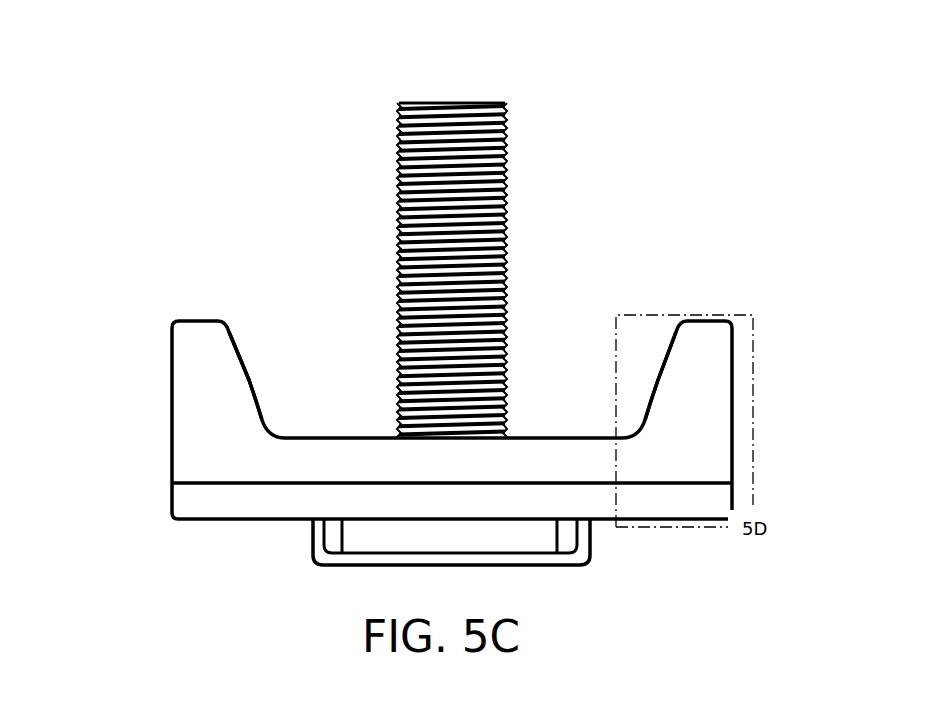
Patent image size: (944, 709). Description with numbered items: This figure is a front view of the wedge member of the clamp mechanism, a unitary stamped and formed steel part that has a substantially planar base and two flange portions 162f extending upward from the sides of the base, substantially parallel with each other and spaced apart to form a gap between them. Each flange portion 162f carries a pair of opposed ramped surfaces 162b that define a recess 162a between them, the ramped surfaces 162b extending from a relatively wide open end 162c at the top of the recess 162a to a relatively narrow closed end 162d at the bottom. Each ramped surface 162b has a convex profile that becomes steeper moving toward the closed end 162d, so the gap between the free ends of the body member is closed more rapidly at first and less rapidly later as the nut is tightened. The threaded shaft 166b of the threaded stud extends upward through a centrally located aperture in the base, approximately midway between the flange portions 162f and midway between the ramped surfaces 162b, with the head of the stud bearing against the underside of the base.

The threaded shaft 166b is at (456, 115).
The open end 162c is at (286, 334).
The recess 162a is at (550, 349).
The flange portions 162f is at (186, 362).
The ramped surfaces 162b is at (246, 380).
The closed end 162d is at (545, 442).